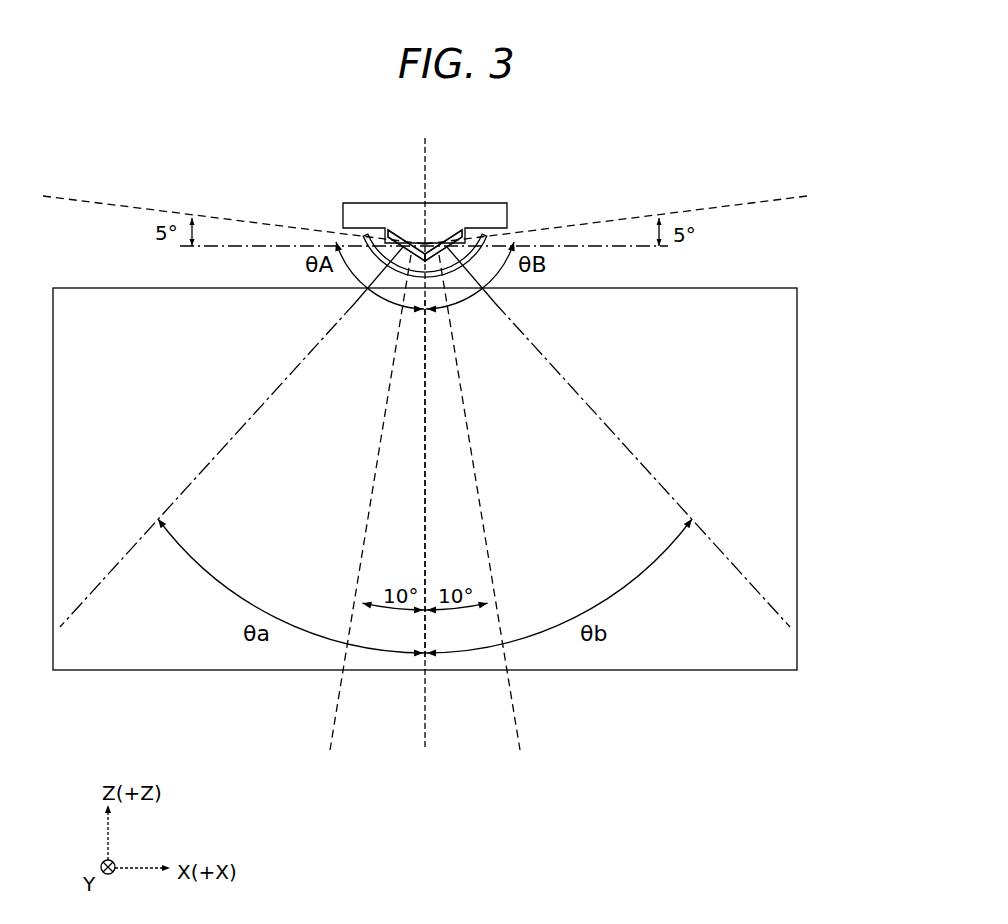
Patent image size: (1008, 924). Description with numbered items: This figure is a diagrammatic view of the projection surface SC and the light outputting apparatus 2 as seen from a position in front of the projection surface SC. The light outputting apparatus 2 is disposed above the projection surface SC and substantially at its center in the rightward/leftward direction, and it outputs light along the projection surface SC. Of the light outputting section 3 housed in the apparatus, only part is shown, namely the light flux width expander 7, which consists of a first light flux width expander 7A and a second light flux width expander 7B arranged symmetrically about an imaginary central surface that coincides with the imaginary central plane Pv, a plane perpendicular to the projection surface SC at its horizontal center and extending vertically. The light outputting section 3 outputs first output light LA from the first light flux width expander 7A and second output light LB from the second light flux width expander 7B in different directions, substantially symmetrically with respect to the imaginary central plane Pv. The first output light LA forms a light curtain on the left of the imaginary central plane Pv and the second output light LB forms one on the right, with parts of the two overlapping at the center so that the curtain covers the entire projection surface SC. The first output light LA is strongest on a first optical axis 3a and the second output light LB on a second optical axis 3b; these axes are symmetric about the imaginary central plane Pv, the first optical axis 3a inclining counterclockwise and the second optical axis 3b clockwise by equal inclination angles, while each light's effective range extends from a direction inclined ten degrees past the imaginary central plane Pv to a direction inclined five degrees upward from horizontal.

The light outputting apparatus 2 is at (337, 203).
The light outputting section 3 is at (433, 214).
The light flux width expander 7 is at (438, 211).
The first light flux width expander 7A is at (408, 231).
The second light flux width expander 7B is at (443, 231).
The first optical axis 3a is at (190, 484).
The second optical axis 3b is at (660, 484).
The first output light LA is at (250, 220).
The second output light LB is at (607, 221).
The projection surface SC is at (797, 388).
The imaginary central plane Pv is at (436, 431).